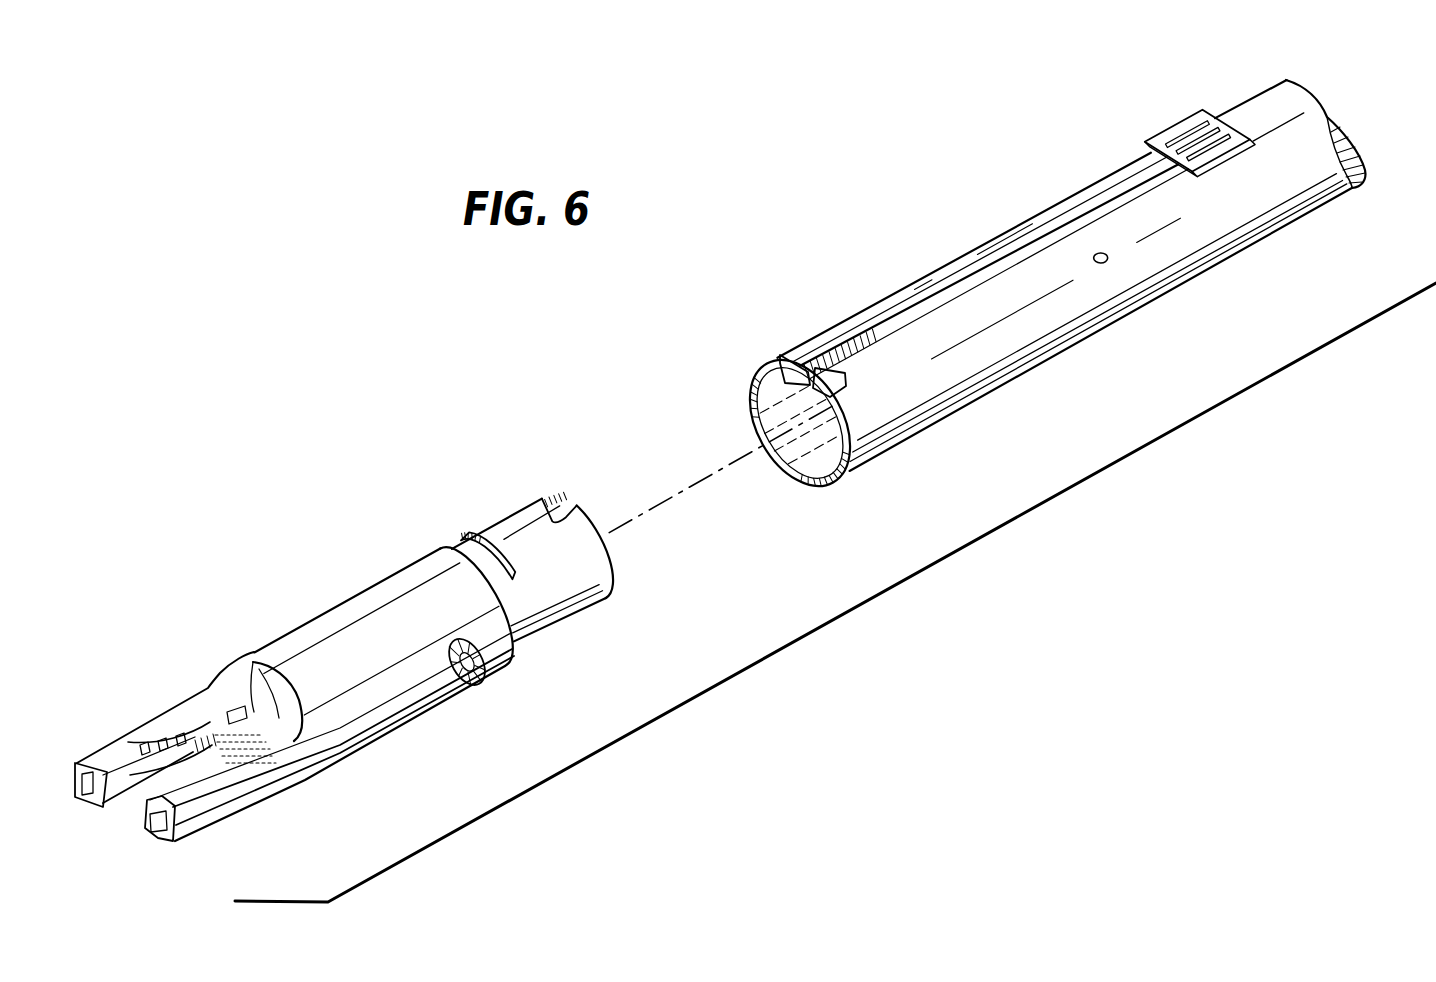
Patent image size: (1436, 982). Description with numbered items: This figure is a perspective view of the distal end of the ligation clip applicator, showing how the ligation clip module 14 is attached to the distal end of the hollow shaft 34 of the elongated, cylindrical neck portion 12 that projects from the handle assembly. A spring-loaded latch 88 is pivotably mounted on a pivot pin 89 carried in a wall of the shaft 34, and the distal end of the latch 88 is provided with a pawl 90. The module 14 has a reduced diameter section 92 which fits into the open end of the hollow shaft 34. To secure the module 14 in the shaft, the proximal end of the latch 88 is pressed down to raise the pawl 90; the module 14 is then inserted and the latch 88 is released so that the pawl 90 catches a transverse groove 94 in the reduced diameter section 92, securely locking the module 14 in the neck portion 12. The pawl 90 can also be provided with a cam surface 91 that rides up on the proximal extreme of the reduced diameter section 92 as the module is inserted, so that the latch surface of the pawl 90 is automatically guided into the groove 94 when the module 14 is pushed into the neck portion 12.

The neck portion 12 is at (1260, 88).
The ligation clip module 14 is at (368, 582).
The hollow shaft 34 is at (942, 428).
The spring-loaded latch 88 is at (992, 233).
The pivot pin 89 is at (1109, 261).
The pawl 90 is at (846, 379).
The cam surface 91 is at (765, 401).
The reduced diameter section 92 is at (598, 602).
The transverse groove 94 is at (511, 578).